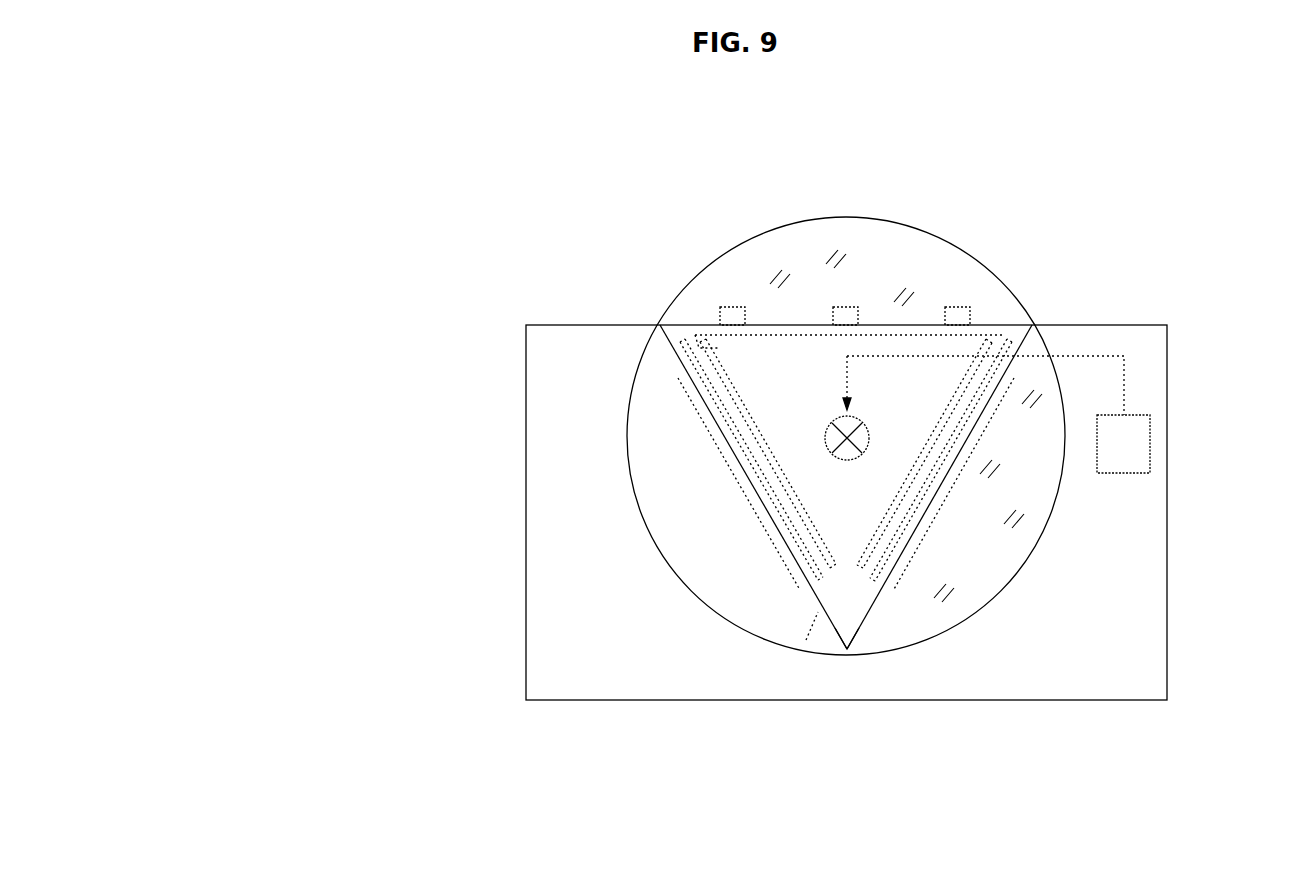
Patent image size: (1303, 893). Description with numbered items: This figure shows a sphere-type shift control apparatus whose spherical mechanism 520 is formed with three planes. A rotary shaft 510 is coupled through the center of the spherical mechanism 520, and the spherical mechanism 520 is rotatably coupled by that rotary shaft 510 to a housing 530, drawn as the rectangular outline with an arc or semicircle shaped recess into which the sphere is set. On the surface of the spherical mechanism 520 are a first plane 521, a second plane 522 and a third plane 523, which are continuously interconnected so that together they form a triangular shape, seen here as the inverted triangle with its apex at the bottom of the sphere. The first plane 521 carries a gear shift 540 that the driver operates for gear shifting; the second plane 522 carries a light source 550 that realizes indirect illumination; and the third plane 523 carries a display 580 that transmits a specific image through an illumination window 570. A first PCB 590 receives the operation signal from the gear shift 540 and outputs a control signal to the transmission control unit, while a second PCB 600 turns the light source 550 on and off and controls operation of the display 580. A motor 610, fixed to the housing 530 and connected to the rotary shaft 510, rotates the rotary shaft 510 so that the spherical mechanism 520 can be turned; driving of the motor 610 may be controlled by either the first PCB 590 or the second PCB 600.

The rotary shaft 510 is at (824, 440).
The spherical mechanism 520 is at (690, 283).
The first plane 521 is at (676, 352).
The second plane 522 is at (1008, 327).
The third plane 523 is at (858, 626).
The housing 530 is at (556, 586).
The gear shift 540 is at (745, 492).
The light source 550 is at (735, 306).
The illumination window 570 is at (850, 240).
The display 580 is at (945, 500).
The first PCB 590 is at (806, 640).
The second PCB 600 is at (802, 328).
The motor 610 is at (1150, 443).